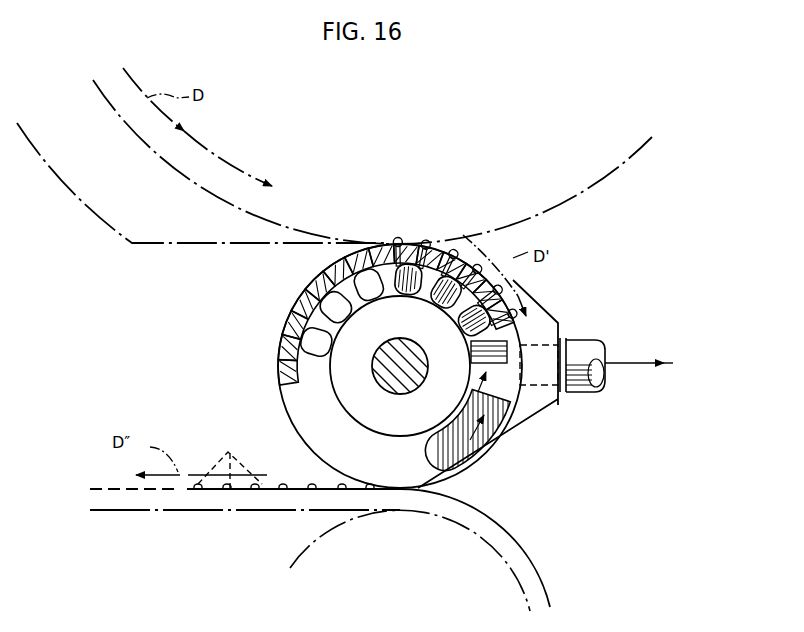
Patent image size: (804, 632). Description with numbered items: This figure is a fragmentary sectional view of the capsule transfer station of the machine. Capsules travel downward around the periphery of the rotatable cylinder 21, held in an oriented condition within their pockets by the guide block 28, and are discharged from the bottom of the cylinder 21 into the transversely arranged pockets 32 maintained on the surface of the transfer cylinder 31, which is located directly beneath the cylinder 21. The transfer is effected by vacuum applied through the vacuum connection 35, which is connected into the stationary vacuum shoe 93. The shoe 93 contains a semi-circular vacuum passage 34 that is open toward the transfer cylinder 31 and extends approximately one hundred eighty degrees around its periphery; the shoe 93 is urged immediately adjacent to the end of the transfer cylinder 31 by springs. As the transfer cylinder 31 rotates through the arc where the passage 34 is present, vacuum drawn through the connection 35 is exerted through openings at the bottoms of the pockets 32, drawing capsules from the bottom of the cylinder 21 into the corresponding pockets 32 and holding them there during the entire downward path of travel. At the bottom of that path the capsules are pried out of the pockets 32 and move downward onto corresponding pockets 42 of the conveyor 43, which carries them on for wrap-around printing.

The cylinder 21 is at (268, 205).
The guide block 28 is at (182, 228).
The transfer cylinder 31 is at (268, 414).
The pockets 32 is at (273, 345).
The vacuum passage 34 is at (480, 412).
The vacuum connection 35 is at (580, 357).
The pockets 42 is at (281, 464).
The conveyor 43 is at (243, 498).
The vacuum shoe 93 is at (545, 404).
The pins Cp is at (428, 238).